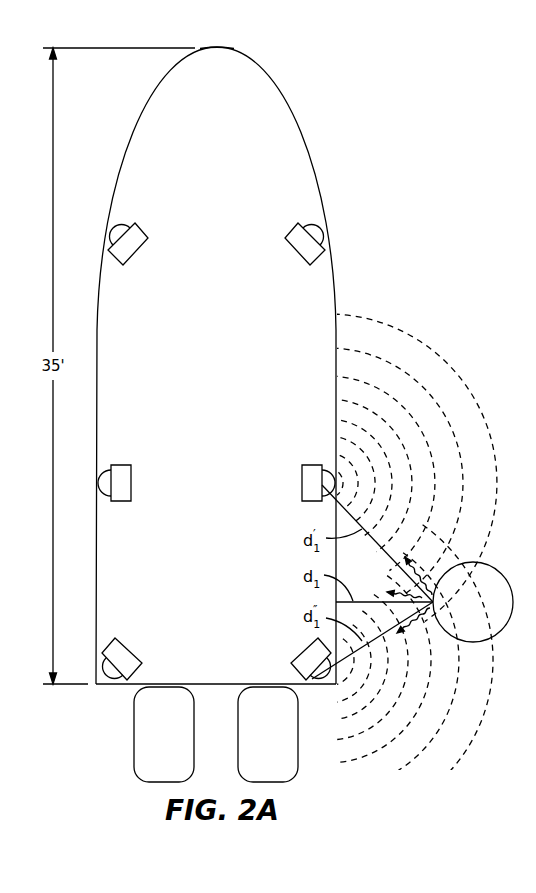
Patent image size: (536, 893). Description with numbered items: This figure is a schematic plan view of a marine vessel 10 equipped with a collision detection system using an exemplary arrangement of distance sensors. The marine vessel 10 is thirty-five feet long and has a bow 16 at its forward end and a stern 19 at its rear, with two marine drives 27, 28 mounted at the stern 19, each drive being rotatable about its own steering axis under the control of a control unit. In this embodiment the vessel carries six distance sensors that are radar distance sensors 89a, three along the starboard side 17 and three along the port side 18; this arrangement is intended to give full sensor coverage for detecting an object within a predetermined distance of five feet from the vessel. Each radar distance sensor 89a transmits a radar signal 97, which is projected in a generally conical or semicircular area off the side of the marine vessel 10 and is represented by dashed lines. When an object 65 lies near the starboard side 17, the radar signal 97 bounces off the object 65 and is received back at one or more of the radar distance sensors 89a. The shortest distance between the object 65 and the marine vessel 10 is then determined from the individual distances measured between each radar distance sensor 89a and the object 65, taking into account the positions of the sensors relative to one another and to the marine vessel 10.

The marine vessel 10 is at (300, 75).
The bow 16 is at (214, 46).
The starboard side 17 is at (333, 250).
The port side 18 is at (100, 250).
The stern 19 is at (222, 689).
The marine drive 27 is at (238, 750).
The marine drive 28 is at (134, 750).
The object 65 is at (484, 612).
The radar distance sensor 89a is at (301, 483).
The radar signal 97 is at (460, 378).